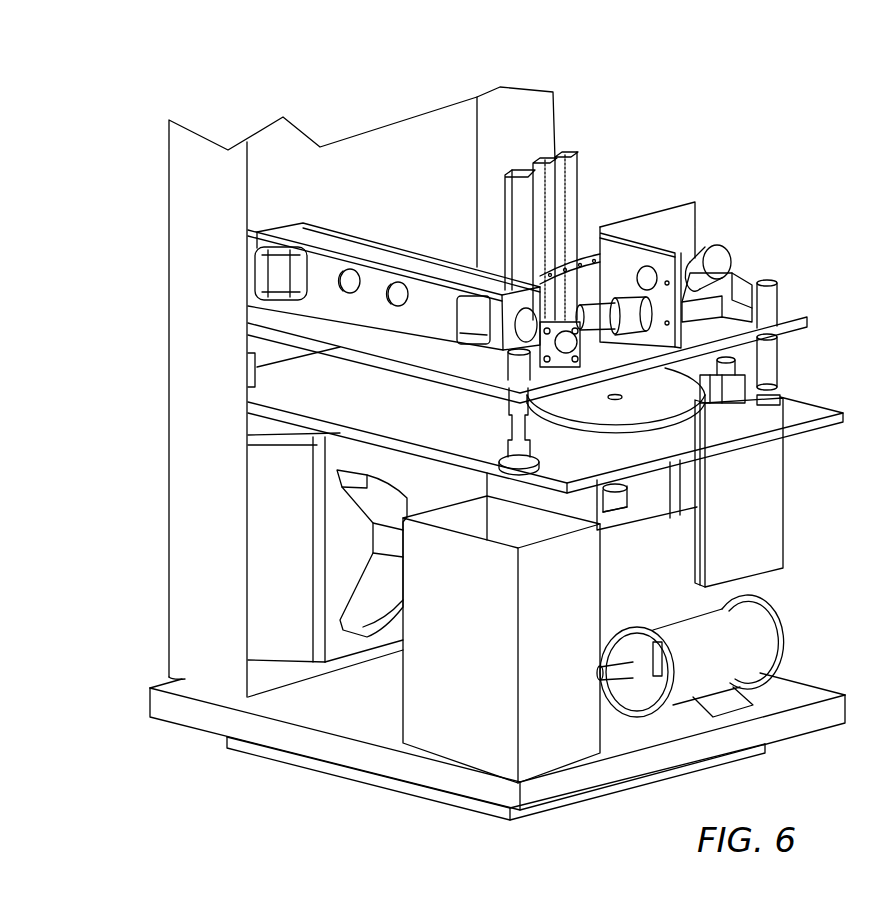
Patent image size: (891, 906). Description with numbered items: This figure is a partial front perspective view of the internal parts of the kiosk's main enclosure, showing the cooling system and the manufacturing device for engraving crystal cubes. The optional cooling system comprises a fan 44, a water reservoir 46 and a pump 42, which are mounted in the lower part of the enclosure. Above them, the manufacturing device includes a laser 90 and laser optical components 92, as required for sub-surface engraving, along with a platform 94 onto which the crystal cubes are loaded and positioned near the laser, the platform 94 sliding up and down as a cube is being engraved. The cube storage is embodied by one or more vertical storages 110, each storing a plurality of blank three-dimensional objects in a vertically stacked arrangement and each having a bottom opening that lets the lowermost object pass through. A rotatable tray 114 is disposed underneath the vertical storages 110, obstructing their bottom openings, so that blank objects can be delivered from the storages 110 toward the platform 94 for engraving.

The pump 42 is at (747, 657).
The fan 44 is at (350, 605).
The water reservoir 46 is at (430, 718).
The laser 90 is at (377, 260).
The laser optical components 92 is at (722, 248).
The platform 94 is at (777, 467).
The vertical storage 110 is at (507, 173).
The rotatable tray 114 is at (627, 413).